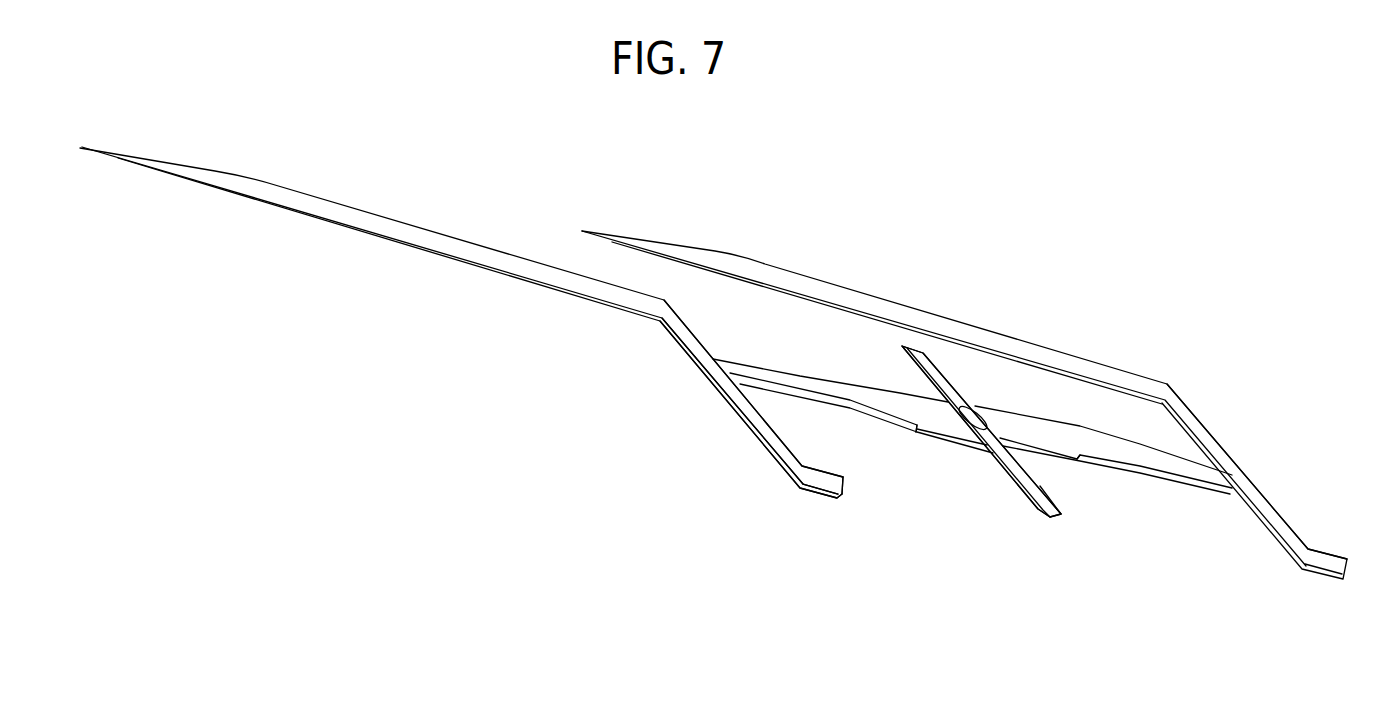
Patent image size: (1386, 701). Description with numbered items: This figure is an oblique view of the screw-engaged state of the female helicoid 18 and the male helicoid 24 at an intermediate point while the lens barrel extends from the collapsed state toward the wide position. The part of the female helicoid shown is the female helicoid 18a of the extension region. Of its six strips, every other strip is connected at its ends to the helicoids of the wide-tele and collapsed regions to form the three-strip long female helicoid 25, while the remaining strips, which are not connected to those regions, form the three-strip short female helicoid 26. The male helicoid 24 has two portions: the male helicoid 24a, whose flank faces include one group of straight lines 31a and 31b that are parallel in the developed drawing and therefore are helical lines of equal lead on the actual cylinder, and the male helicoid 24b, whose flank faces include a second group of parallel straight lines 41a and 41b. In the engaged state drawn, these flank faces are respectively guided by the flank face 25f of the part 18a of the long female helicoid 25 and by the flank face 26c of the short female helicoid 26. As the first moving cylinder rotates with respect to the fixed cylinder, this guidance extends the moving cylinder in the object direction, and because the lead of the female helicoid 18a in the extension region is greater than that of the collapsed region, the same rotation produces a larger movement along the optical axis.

The female helicoid 18 is at (964, 413).
The female helicoid of the extension region 18a is at (964, 413).
The long female helicoid 25 is at (1124, 374).
The short female helicoid 26 is at (1050, 519).
The straight line 31a is at (712, 366).
The straight line 31b is at (943, 401).
The straight line 41a is at (988, 414).
The straight line 41b is at (1240, 470).
The flank face 25f is at (743, 425).
The male helicoid 24 is at (972, 457).
The male helicoid 24a is at (890, 409).
The male helicoid 24b is at (1124, 452).
The flank face 26c is at (993, 470).